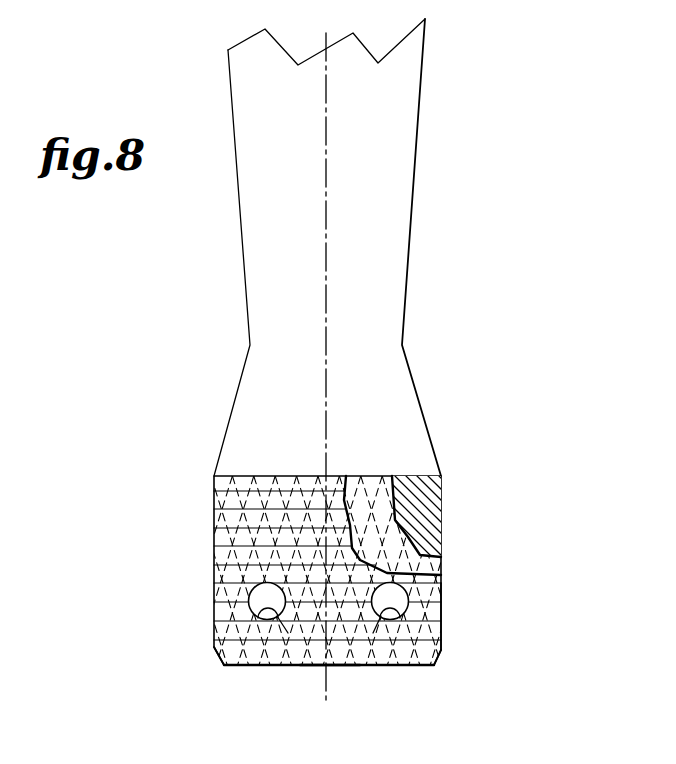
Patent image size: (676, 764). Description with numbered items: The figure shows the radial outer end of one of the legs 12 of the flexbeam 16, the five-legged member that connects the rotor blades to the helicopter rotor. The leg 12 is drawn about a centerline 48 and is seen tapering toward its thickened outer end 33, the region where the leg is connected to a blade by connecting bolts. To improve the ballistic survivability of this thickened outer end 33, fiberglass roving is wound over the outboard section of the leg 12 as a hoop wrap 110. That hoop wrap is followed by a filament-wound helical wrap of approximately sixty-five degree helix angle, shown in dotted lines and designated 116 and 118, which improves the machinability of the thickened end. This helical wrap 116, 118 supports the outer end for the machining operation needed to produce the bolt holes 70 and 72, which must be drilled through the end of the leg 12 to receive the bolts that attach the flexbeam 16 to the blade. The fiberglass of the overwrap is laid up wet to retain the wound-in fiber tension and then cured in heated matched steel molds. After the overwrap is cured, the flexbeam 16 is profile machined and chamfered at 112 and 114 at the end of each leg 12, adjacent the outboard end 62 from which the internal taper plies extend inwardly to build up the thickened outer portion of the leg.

The flexbeam 16 is at (354, 385).
The leg 12 is at (416, 152).
The longitudinal axis 48 is at (326, 316).
The outer end 33 is at (215, 632).
The helical wrap 116 is at (347, 505).
The helical wrap 118 is at (423, 521).
The hoop wrap 110 is at (430, 618).
The bolt hole 70 is at (288, 665).
The bolt hole 72 is at (368, 665).
The chamfer 112 is at (218, 653).
The chamfer 114 is at (435, 657).
The outboard end 62 is at (342, 665).